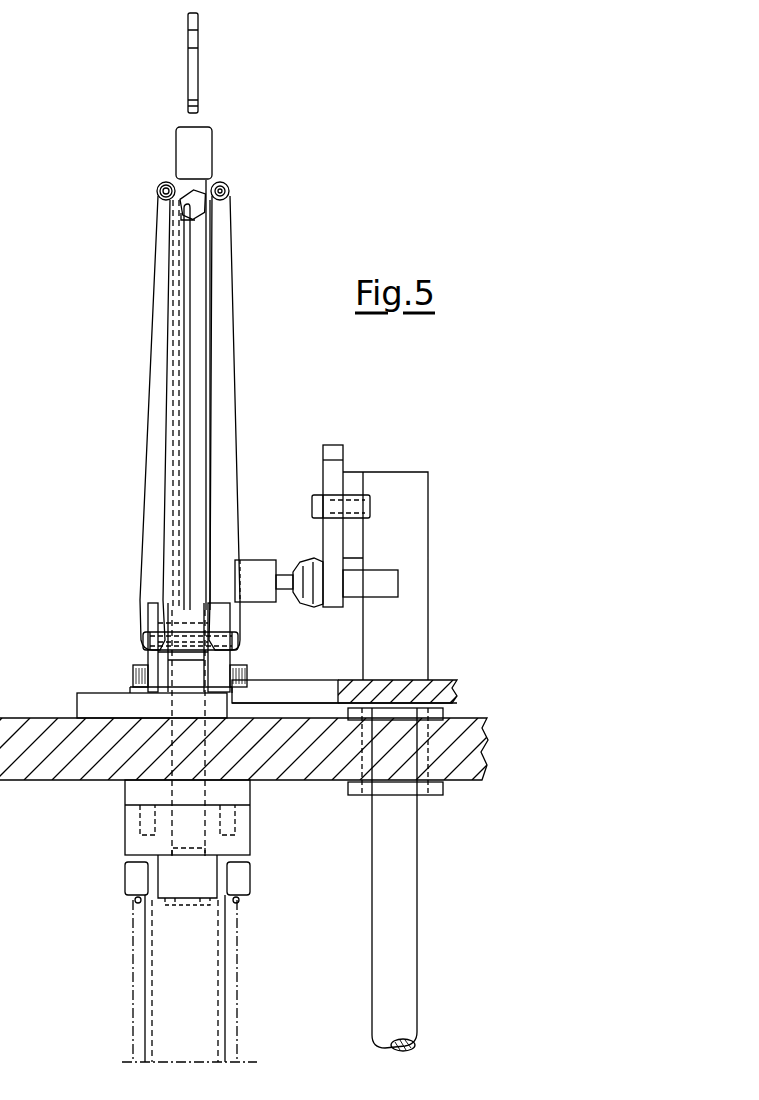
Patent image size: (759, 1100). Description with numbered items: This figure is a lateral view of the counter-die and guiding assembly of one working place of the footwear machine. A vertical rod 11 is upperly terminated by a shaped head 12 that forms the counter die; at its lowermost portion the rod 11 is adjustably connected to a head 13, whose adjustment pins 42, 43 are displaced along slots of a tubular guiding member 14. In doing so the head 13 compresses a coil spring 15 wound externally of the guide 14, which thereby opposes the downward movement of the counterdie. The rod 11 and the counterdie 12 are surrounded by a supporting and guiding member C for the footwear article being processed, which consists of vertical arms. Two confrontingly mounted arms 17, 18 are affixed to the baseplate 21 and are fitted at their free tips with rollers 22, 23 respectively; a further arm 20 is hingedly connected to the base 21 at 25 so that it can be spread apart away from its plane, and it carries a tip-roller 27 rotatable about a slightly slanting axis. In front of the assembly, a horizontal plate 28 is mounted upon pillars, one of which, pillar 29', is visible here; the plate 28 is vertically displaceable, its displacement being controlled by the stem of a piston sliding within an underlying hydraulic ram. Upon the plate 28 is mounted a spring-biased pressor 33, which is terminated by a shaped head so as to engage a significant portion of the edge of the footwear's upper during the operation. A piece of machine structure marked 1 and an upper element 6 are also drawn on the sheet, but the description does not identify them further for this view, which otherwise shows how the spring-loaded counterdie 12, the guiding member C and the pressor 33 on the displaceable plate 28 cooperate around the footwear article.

The floor / base plate 1 is at (26, 781).
The rod 6 is at (200, 68).
The rod 11 is at (206, 407).
The shaped head 12 is at (208, 145).
The head 13 is at (175, 908).
The tubular guiding member 14 is at (208, 978).
The coil spring 15 is at (240, 903).
The vertical arm 17 is at (146, 472).
The vertical arm 18 is at (230, 473).
The vertical arm 20 is at (183, 402).
The baseplate 21 is at (110, 702).
The roller 22 is at (229, 191).
The roller 23 is at (157, 190).
The hinge connection 25 is at (145, 634).
The tip-roller 27 is at (196, 200).
The horizontal plate 28 is at (296, 690).
The pillar 29' is at (417, 879).
The pressor 33 is at (256, 566).
The adjustment pin 42 is at (128, 880).
The adjustment pin 43 is at (250, 882).
The supporting and guiding member C is at (149, 335).